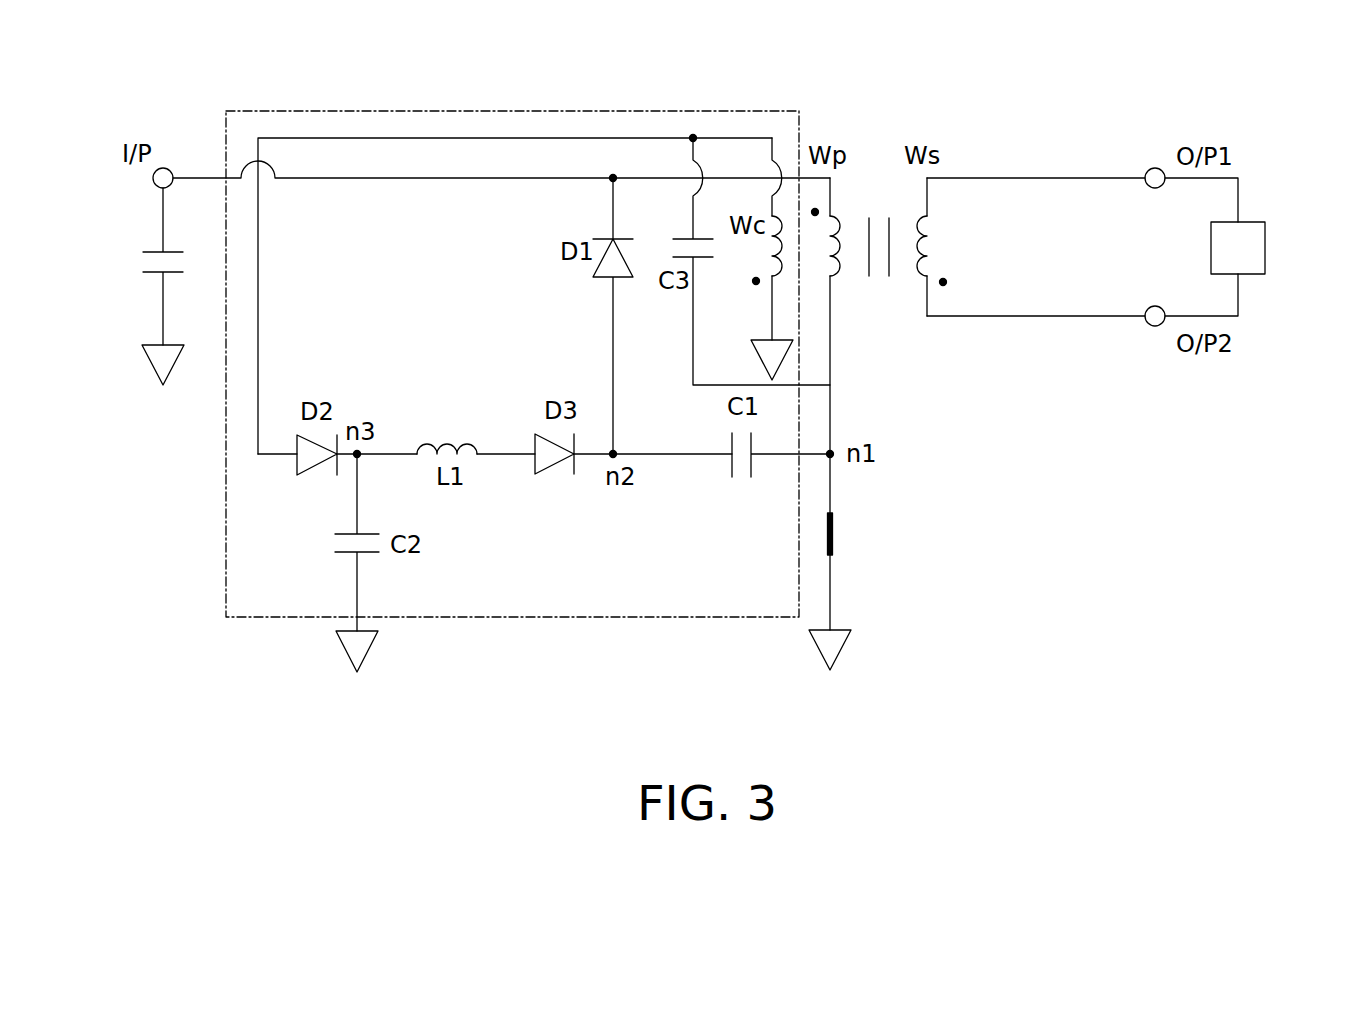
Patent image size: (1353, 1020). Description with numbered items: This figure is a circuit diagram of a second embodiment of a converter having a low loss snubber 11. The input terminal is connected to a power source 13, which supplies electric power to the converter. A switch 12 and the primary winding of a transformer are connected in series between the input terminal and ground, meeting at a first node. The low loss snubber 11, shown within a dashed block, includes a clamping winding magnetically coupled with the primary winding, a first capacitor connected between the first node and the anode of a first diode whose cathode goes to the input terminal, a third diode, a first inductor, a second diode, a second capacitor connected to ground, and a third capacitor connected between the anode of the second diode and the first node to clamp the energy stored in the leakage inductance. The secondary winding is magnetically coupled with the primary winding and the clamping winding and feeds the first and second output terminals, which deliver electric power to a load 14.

The low loss snubber 11 is at (752, 111).
The switch 12 is at (848, 525).
The power source 13 is at (146, 250).
The load 14 is at (1265, 246).